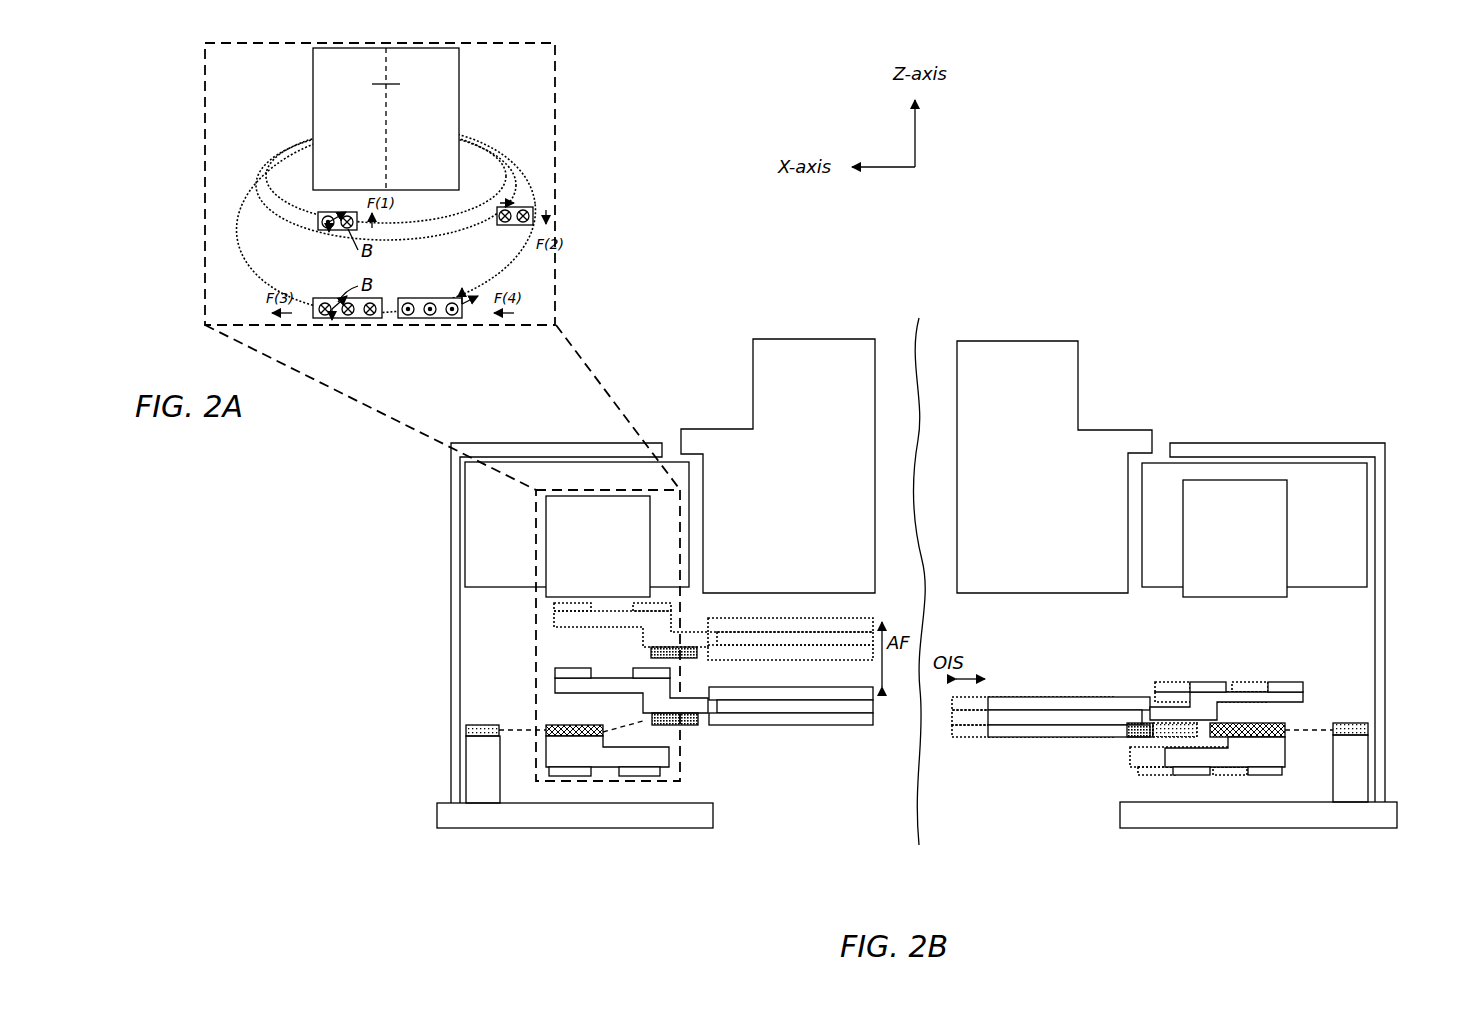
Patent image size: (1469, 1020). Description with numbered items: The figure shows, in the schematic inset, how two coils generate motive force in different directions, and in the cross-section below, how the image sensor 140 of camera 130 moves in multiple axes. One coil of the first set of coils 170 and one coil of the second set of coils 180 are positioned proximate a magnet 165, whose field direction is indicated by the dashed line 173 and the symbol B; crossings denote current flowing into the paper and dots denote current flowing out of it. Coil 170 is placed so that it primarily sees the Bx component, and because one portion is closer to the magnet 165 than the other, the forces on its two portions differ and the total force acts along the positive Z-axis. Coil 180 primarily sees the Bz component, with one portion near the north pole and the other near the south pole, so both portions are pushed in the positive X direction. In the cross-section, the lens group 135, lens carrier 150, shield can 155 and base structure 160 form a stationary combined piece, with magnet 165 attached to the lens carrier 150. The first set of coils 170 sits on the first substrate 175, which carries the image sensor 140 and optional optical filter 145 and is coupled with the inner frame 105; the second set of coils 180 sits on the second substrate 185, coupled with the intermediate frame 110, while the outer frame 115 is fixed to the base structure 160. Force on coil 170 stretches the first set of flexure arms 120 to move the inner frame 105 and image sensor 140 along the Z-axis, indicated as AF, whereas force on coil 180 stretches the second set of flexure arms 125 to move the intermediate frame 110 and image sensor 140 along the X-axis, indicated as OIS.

In FIG. 2B, the inner frame 105 is at (650, 652).
In FIG. 2B, the intermediate frame 110 is at (560, 725).
In FIG. 2B, the outer frame 115 is at (470, 724).
In FIG. 2B, the first set of flexure arms 120 is at (641, 722).
In FIG. 2B, the second set of flexure arms 125 is at (503, 746).
In FIG. 2B, the camera 130 is at (1116, 284).
In FIG. 2B, the lens group 135 is at (836, 373).
In FIG. 2B, the image sensor 140 is at (778, 726).
In FIG. 2B, the optical filter 145 is at (767, 687).
In FIG. 2B, the lens carrier 150 is at (514, 520).
In FIG. 2B, the shield can 155 is at (1396, 642).
In FIG. 2B, the base structure 160 is at (640, 828).
In FIG. 2A, the magnet 165 is at (386, 119).
In FIG. 2B, the magnet 165 is at (1251, 578).
In FIG. 2B, the first set of coils 170 is at (640, 669).
In FIG. 2A, the dashed line 173 is at (285, 140).
In FIG. 2B, the first substrate 175 is at (632, 695).
In FIG. 2B, the second set of coils 180 is at (648, 777).
In FIG. 2B, the second substrate 185 is at (645, 728).